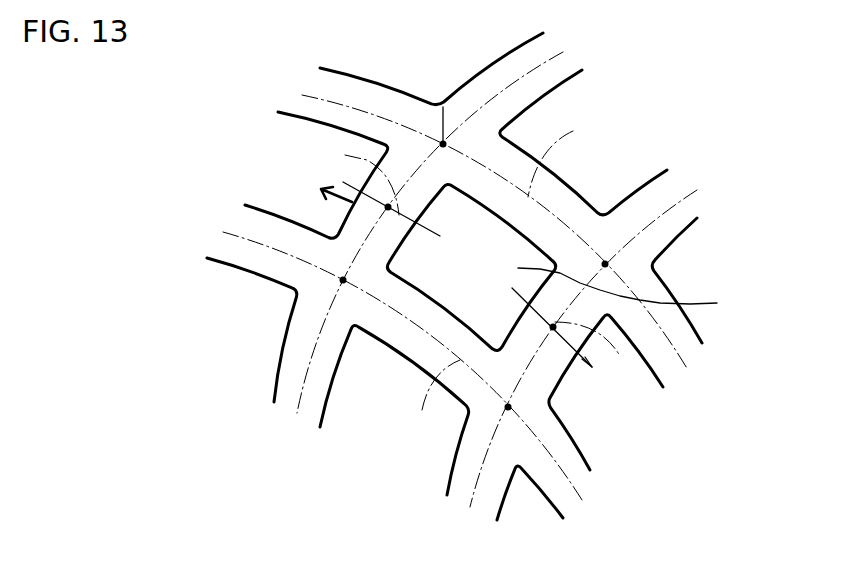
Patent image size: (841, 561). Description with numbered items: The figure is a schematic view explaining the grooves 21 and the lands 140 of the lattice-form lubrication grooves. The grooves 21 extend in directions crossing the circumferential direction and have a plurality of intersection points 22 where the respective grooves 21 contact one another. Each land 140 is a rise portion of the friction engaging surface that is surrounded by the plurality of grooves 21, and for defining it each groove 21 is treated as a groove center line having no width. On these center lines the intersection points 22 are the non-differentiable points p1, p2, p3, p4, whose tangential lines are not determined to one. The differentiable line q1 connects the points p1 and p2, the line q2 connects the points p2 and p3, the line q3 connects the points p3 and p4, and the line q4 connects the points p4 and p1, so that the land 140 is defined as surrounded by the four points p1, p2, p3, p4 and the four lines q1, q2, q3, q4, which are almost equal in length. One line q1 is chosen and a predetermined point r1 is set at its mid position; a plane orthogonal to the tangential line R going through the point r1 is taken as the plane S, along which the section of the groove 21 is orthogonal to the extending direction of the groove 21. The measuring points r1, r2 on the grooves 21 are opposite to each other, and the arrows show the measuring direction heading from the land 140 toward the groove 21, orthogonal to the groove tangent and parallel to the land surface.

The groove 21 is at (327, 85).
The intersection point 22 is at (432, 127).
The land 140 is at (639, 292).
The plane S is at (428, 233).
The tangential line R is at (326, 208).
The non-differentiable point p1 is at (443, 107).
The non-differentiable point p2 is at (343, 283).
The non-differentiable point p3 is at (563, 410).
The non-differentiable point p4 is at (605, 261).
The differentiable line q1 is at (359, 179).
The differentiable line q2 is at (436, 399).
The differentiable line q3 is at (600, 352).
The differentiable line q4 is at (566, 157).
The predetermined point r1 is at (388, 210).
The measuring point r2 is at (550, 327).